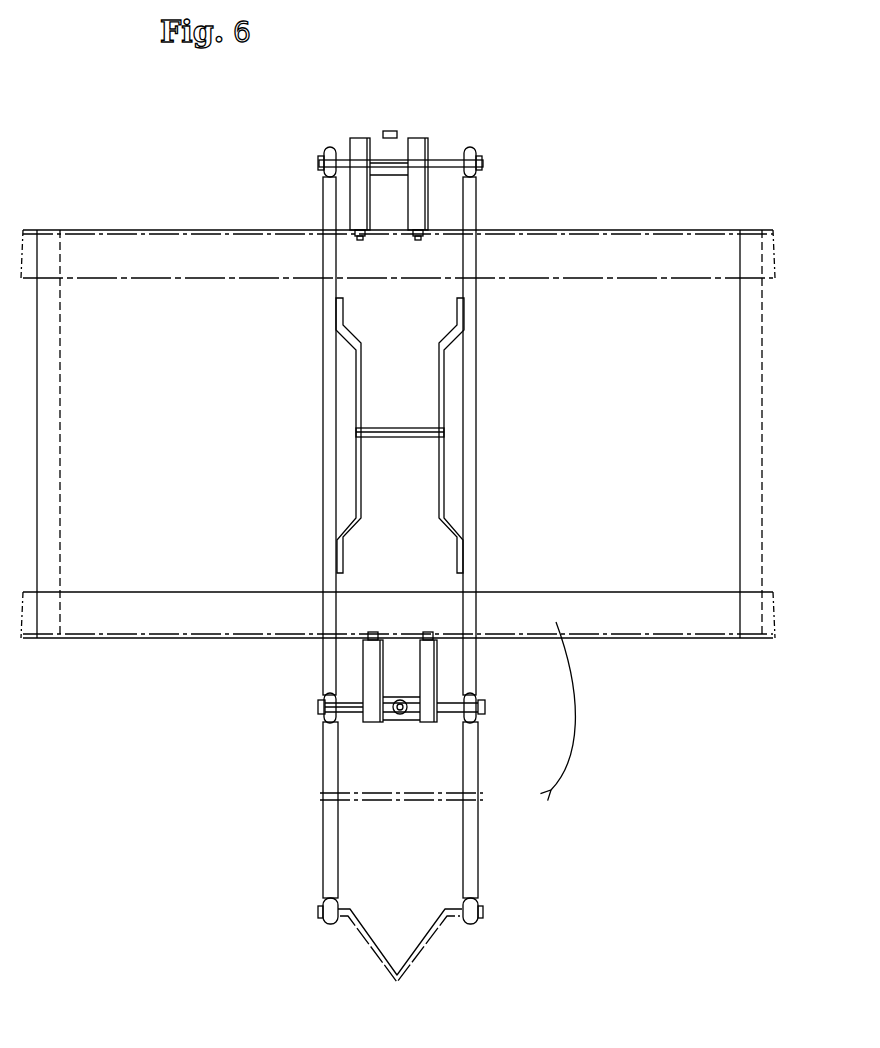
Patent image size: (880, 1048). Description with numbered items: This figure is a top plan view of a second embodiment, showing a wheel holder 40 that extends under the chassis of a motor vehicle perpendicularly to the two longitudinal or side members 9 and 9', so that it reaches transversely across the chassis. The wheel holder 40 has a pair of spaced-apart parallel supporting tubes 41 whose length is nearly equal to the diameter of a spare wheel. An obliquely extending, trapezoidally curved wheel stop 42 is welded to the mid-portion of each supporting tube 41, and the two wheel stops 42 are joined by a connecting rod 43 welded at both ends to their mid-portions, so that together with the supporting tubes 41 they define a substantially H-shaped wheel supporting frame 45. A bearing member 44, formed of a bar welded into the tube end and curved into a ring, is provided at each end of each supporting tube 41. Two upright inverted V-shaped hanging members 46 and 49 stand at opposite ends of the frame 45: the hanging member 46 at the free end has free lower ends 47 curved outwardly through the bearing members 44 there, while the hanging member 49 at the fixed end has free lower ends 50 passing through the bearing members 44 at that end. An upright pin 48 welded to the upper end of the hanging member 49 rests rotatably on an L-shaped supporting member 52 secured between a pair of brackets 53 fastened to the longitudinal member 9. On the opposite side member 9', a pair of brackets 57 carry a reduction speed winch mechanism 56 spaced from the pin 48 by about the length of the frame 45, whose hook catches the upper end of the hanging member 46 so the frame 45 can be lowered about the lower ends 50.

The longitudinal member 9 is at (398, 469).
The longitudinal member 9' is at (398, 218).
The wheel holder 40 is at (497, 318).
The supporting tube 41 is at (340, 268).
The wheel stop 42 is at (487, 292).
The connecting rod 43 is at (358, 503).
The bearing member 44 is at (330, 152).
The wheel supporting frame 45 is at (410, 430).
The hanging member 46 is at (448, 162).
The free lower end 47 is at (318, 166).
The upright pin 48 is at (398, 720).
The hanging member 49 is at (350, 712).
The free lower end 50 is at (318, 707).
The supporting member 52 is at (393, 714).
The bracket 53 is at (373, 682).
The reduction speed winch mechanism 56 is at (380, 153).
The bracket 57 is at (417, 168).